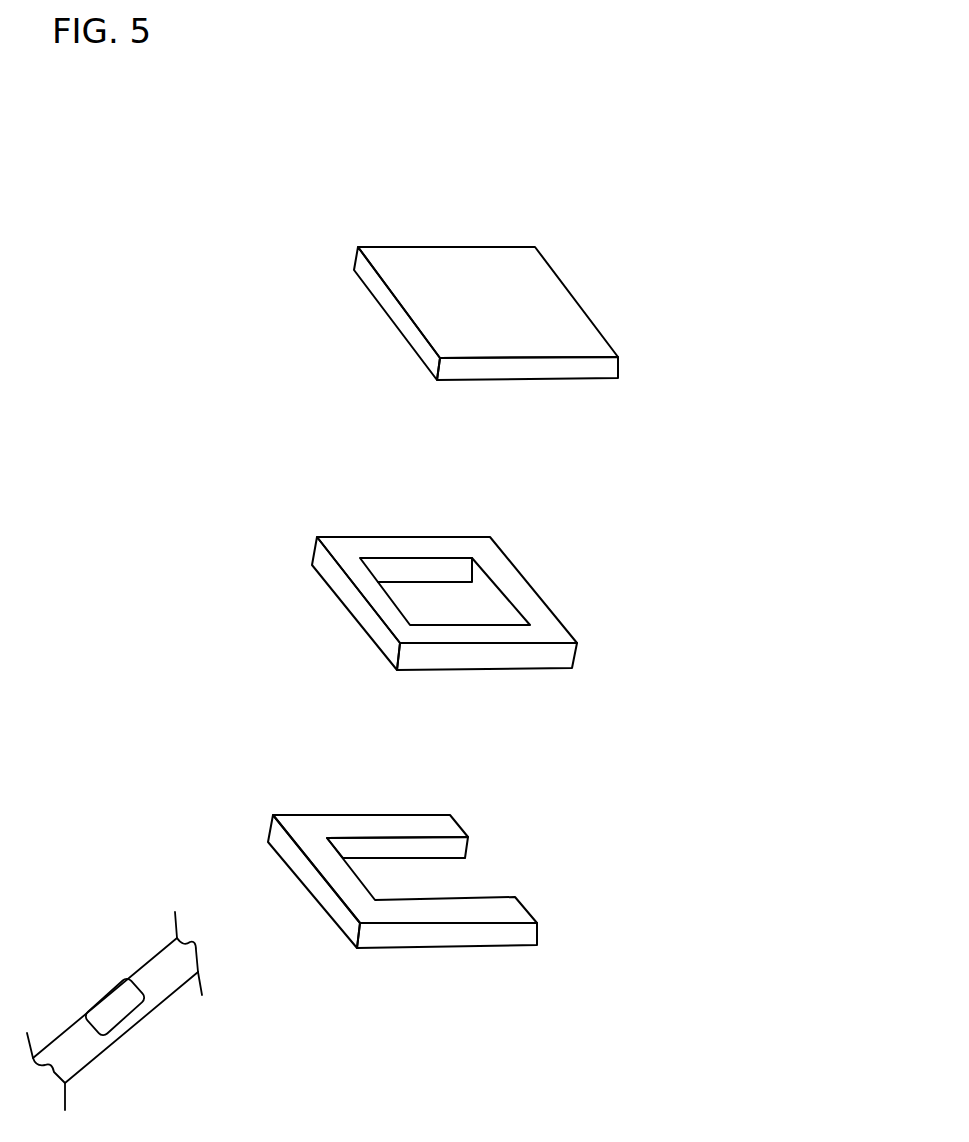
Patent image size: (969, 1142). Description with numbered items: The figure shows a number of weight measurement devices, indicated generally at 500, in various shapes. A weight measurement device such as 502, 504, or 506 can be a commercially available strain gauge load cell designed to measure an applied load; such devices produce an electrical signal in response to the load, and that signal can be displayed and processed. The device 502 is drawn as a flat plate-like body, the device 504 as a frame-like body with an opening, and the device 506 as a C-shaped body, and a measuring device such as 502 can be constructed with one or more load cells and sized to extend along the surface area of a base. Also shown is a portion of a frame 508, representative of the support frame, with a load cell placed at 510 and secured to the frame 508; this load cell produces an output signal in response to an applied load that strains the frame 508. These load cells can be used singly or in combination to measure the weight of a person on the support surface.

The weight measurement devices 500 is at (778, 195).
The weight measurement device 502 is at (395, 253).
The weight measurement device 504 is at (343, 547).
The weight measurement device 506 is at (317, 823).
The frame portion 508 is at (158, 963).
The load cell 510 is at (117, 1008).